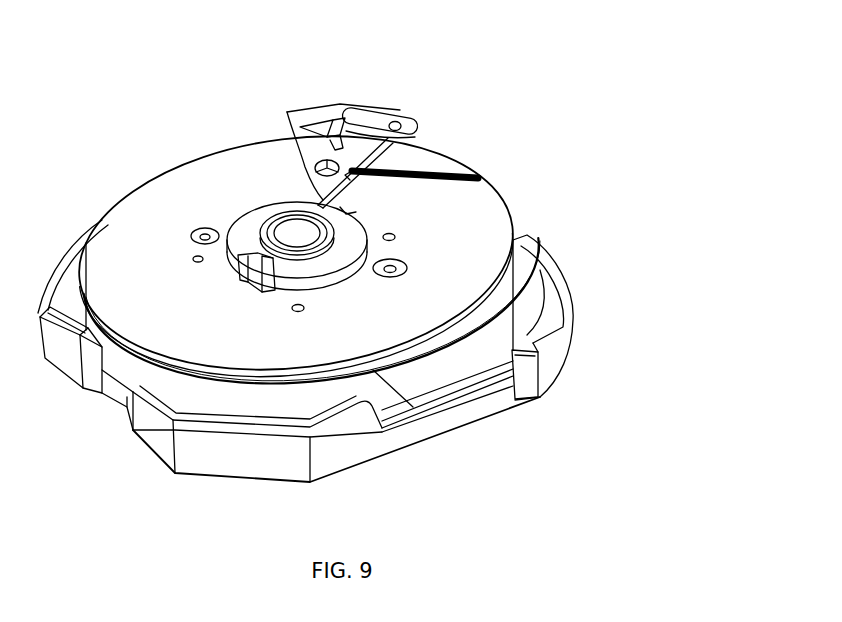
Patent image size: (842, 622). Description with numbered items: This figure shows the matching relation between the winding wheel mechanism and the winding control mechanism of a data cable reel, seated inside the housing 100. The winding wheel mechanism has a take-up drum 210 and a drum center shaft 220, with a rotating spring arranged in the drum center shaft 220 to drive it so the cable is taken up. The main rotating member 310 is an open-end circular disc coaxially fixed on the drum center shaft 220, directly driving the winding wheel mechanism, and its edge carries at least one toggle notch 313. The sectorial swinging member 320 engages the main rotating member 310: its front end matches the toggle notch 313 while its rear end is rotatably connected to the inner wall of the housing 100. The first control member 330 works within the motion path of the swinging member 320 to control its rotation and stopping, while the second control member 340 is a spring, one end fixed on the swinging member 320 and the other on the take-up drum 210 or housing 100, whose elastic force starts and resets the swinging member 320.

The housing 100 is at (337, 445).
The take-up drum 210 is at (158, 230).
The drum center shaft 220 is at (298, 232).
The main rotating member 310 is at (352, 230).
The toggle notch 313 is at (258, 280).
The swinging member 320 is at (392, 143).
The first control member 330 is at (405, 118).
The second control member 340 is at (480, 178).